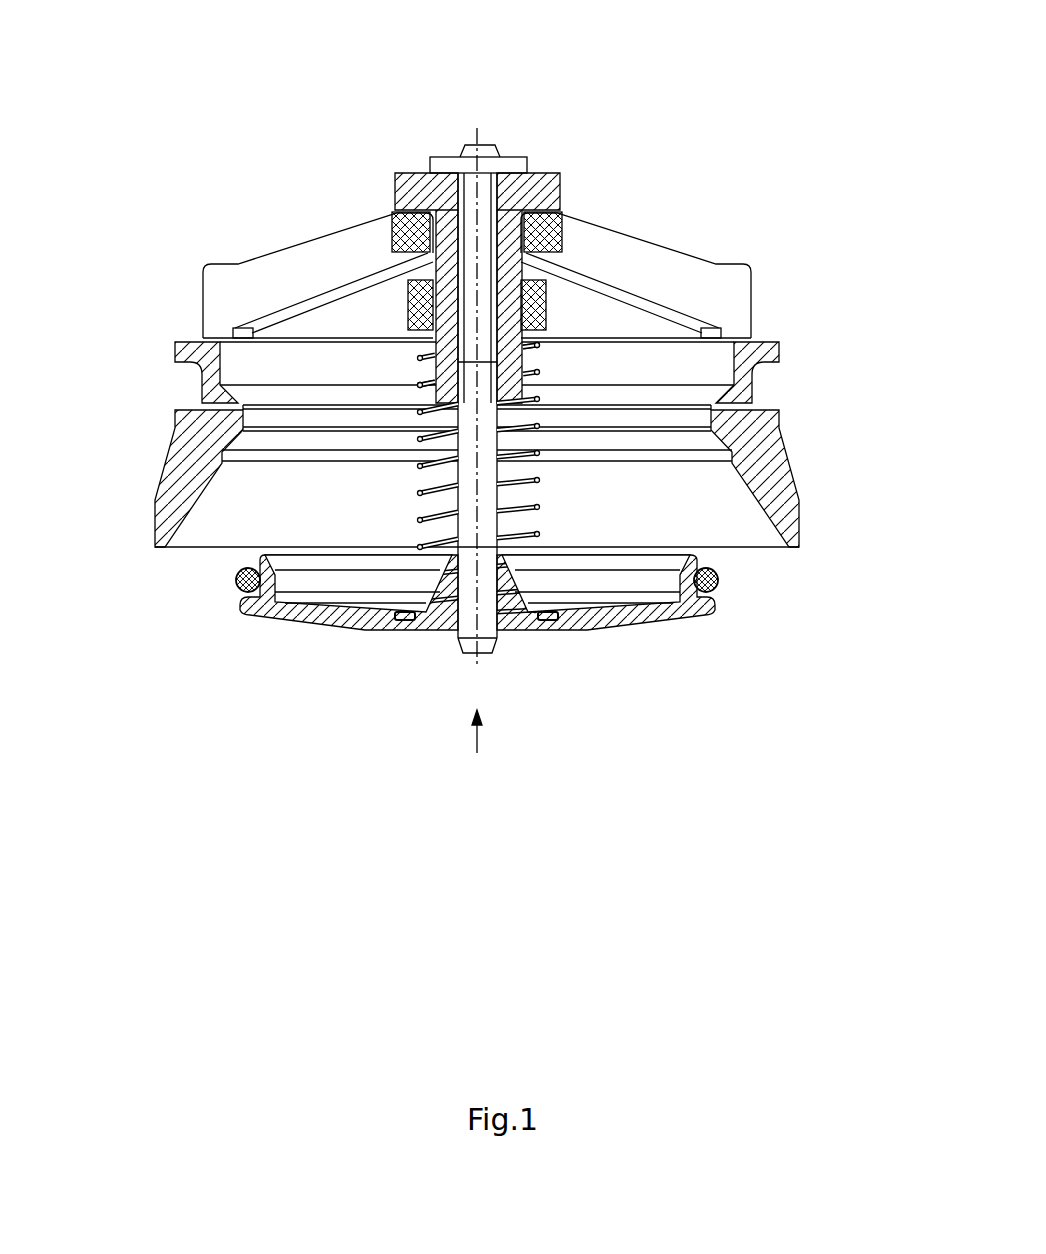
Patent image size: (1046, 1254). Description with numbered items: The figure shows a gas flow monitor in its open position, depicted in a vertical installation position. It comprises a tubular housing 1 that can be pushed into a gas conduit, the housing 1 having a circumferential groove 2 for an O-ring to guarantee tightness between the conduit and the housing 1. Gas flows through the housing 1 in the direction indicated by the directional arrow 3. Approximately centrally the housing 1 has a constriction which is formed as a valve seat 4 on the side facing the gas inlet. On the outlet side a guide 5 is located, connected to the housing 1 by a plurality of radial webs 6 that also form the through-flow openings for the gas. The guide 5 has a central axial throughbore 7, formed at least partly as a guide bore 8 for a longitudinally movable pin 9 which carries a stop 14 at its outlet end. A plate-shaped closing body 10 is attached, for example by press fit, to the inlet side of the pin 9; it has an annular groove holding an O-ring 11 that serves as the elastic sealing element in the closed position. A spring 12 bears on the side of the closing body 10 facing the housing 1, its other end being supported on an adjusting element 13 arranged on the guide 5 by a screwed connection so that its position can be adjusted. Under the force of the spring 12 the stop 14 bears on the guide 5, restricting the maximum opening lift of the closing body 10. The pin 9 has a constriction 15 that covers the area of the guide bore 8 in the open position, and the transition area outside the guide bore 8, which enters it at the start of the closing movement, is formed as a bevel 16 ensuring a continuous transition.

The housing 1 is at (778, 502).
The circumferential groove 2 is at (763, 387).
The directional arrow 3 is at (477, 753).
The valve seat 4 is at (718, 438).
The guide 5 is at (512, 270).
The radial webs 6 is at (722, 283).
The throughbore 7 is at (455, 200).
The guide bore 8 is at (420, 387).
The pin 9 is at (485, 217).
The closing body 10 is at (683, 602).
The O-ring 11 is at (712, 586).
The spring 12 is at (539, 482).
The adjusting element 13 is at (419, 307).
The stop 14 is at (508, 165).
The constriction 15 is at (538, 346).
The bevel 16 is at (460, 406).